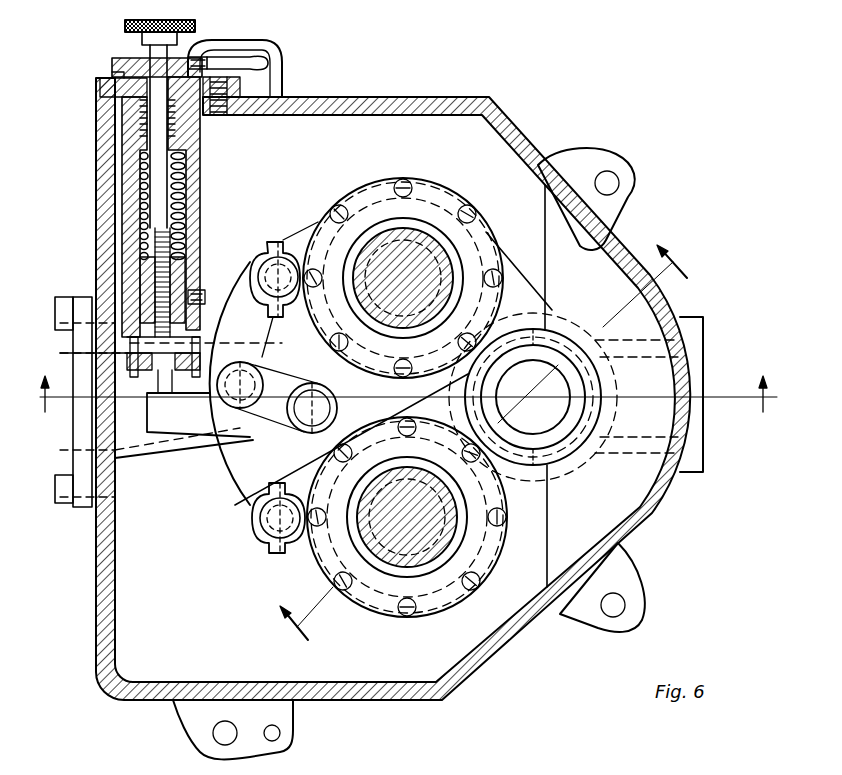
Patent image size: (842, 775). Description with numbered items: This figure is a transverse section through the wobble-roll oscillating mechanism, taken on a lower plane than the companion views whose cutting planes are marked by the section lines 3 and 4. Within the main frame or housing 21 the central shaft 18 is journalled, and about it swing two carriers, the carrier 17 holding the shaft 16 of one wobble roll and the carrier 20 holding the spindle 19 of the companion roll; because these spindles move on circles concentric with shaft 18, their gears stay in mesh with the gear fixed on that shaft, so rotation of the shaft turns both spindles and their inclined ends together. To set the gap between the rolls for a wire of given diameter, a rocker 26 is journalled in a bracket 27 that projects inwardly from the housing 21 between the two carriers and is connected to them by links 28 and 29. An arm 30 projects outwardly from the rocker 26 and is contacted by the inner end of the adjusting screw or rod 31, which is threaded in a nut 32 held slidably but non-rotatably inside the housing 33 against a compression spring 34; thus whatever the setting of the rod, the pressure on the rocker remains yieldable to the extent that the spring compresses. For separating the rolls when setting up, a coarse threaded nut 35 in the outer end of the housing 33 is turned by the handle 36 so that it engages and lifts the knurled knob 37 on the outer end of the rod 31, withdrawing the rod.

The section line 3- 3 is at (408, 384).
The section line 4- 4 is at (473, 431).
The shaft 16 is at (428, 548).
The carrier 17 is at (550, 490).
The shaft 18 is at (556, 430).
The spindle 19 is at (363, 250).
The carrier 20 is at (547, 307).
The main frame or housing 21 is at (97, 585).
The rocker 26 is at (243, 427).
The bracket 27 is at (150, 458).
The link 28 is at (252, 494).
The link 29 is at (218, 298).
The arm 30 is at (193, 430).
The adjusting screw or rod 31 is at (150, 190).
The nut 32 is at (150, 276).
The housing 33 is at (123, 162).
The compression spring 34 is at (185, 191).
The coarse threaded nut 35 is at (140, 121).
The handle 36 is at (243, 57).
The knurled knob 37 is at (126, 25).